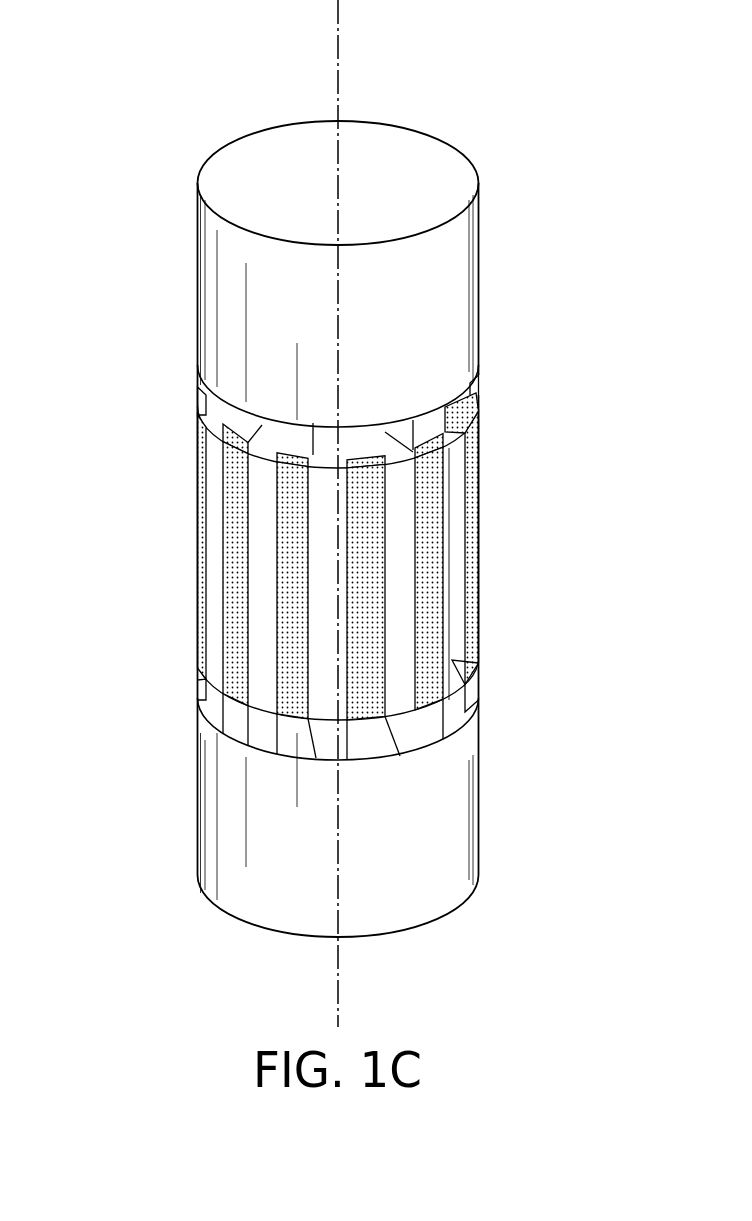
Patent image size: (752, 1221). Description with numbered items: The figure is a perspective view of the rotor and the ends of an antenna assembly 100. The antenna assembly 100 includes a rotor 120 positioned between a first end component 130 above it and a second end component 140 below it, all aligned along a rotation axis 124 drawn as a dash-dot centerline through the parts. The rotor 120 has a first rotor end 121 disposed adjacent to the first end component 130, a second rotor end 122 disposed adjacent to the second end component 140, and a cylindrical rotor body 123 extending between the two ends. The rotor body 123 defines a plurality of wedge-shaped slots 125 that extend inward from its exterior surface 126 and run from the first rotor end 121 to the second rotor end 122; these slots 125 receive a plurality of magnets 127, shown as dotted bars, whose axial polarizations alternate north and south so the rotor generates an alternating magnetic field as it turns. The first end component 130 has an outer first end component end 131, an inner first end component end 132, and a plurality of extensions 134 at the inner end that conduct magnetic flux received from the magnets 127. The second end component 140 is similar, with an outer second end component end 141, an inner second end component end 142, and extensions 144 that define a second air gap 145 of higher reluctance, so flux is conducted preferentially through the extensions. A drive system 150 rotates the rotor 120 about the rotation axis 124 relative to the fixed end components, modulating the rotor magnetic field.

The antenna assembly 100 is at (152, 72).
The rotor 120 is at (160, 430).
The first rotor end 121 is at (468, 408).
The second rotor end 122 is at (455, 690).
The rotor body 123 is at (450, 527).
The rotation axis 124 is at (337, 1).
The slots 125 is at (222, 537).
The exterior surface 126 is at (458, 581).
The magnets 127 is at (197, 588).
The first end component 130 is at (456, 120).
The outer first end component end 131 is at (452, 170).
The inner first end component end 132 is at (478, 383).
The extensions 134 is at (197, 400).
The second end component 140 is at (450, 961).
The outer second end component end 141 is at (455, 910).
The inner second end component end 142 is at (459, 711).
The extensions 144 is at (198, 694).
The second air gap 145 is at (230, 726).
The drive system 150 is at (572, 461).